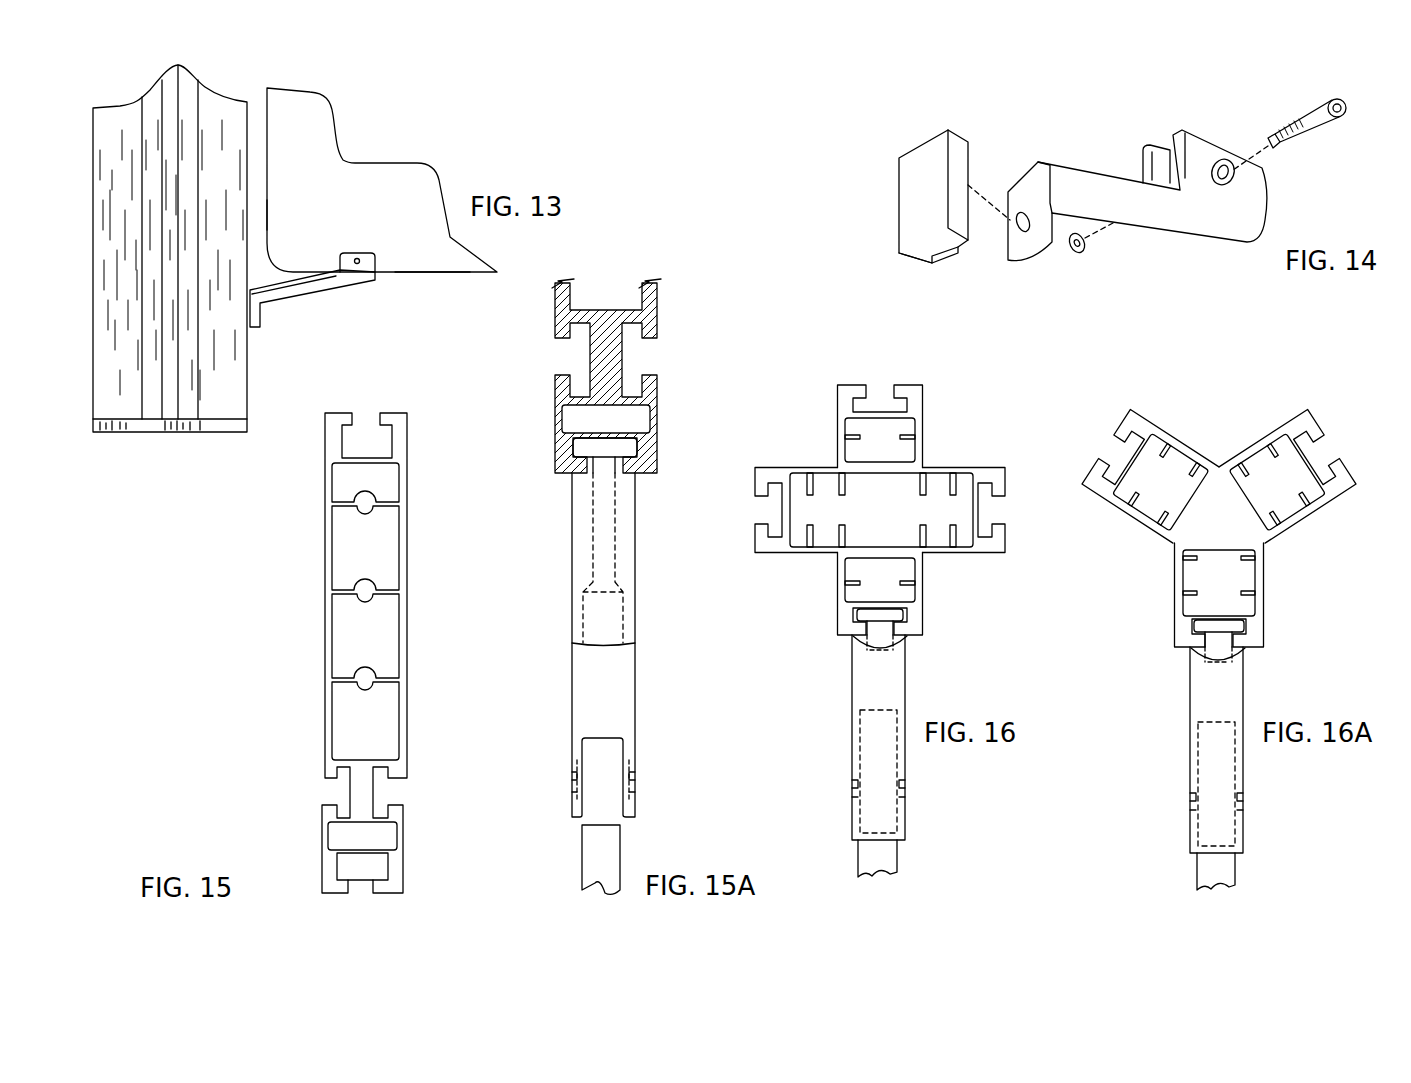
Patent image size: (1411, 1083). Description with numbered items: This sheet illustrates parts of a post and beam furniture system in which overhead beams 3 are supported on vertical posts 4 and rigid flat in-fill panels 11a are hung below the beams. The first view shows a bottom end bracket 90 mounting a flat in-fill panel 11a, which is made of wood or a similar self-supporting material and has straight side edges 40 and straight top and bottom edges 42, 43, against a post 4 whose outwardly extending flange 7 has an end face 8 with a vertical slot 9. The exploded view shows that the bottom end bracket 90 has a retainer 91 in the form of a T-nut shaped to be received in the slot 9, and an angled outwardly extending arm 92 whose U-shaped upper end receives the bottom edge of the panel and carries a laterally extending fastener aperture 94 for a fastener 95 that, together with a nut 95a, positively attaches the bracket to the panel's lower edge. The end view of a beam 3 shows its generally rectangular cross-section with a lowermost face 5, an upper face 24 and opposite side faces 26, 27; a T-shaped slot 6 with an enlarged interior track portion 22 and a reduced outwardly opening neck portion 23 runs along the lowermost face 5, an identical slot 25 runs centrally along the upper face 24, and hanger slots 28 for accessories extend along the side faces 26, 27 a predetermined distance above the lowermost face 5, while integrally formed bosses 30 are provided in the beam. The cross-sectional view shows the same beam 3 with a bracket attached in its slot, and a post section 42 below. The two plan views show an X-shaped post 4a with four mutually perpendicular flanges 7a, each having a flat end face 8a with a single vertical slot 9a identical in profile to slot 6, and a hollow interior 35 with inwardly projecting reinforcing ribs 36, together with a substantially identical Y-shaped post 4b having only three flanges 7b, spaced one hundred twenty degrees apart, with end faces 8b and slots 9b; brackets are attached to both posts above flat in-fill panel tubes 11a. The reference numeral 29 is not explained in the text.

In FIG. 15, the beam 3 is at (360, 639).
In FIG. 15A, the beam 3 is at (651, 282).
In FIG. 13, the post 4 is at (215, 100).
In FIG. 16, the X-shaped post 4a is at (873, 501).
In FIG. 16A, the Y-shaped post 4b is at (1233, 526).
In FIG. 15, the lowermost face 5 is at (330, 890).
In FIG. 15A, the lowermost face 5 is at (562, 480).
In FIG. 15, the slot 6 is at (360, 880).
In FIG. 15A, the slot 6 is at (640, 446).
In FIG. 16, the slot 6 is at (880, 629).
In FIG. 16A, the slot 6 is at (1218, 641).
In FIG. 13, the flange 7 is at (150, 258).
In FIG. 16, the flange 7a is at (886, 503).
In FIG. 16A, the flange 7b is at (1219, 520).
In FIG. 13, the end face 8 is at (100, 135).
In FIG. 16, the end face 8a is at (825, 501).
In FIG. 16A, the end face 8b is at (1256, 526).
In FIG. 13, the slot 9 is at (168, 225).
In FIG. 16, the slot 9a is at (878, 491).
In FIG. 16A, the slot 9b is at (1219, 528).
In FIG. 13, the flat in-fill panel 11a is at (317, 125).
In FIG. 15A, the flat in-fill panel 11a is at (580, 870).
In FIG. 16, the flat in-fill panel 11a is at (888, 860).
In FIG. 16A, the flat in-fill panel 11a is at (1227, 877).
In FIG. 15, the interior track portion 22 is at (385, 865).
In FIG. 15A, the interior track portion 22 is at (573, 447).
In FIG. 15, the neck portion 23 is at (378, 890).
In FIG. 15A, the neck portion 23 is at (628, 465).
In FIG. 15, the upper face 24 is at (340, 412).
In FIG. 15, the slot 25 is at (368, 410).
In FIG. 15, the side face 26 is at (326, 580).
In FIG. 15A, the side face 26 is at (555, 306).
In FIG. 15, the side face 27 is at (407, 590).
In FIG. 15A, the side face 27 is at (660, 312).
In FIG. 15, the hanger slot 28 is at (330, 790).
In FIG. 15A, the hanger slot 28 is at (566, 357).
In FIG. 15A, the hook recess 29 is at (636, 352).
In FIG. 15, the boss 30 is at (360, 500).
In FIG. 16, the hollow interior 35 is at (881, 510).
In FIG. 16A, the hollow interior 35 is at (1224, 526).
In FIG. 16, the reinforcing rib 36 is at (881, 510).
In FIG. 16A, the reinforcing rib 36 is at (1219, 519).
In FIG. 13, the side edge 40 is at (272, 196).
In FIG. 15A, the top edge 42 is at (593, 818).
In FIG. 16, the top edge 42 is at (878, 737).
In FIG. 16A, the top edge 42 is at (1216, 750).
In FIG. 13, the bottom edge 43 is at (405, 275).
In FIG. 13, the bottom end bracket 90 is at (376, 259).
In FIG. 14, the bottom end bracket 90 is at (1098, 185).
In FIG. 14, the retainer 91 is at (912, 210).
In FIG. 13, the arm 92 is at (300, 292).
In FIG. 14, the arm 92 is at (1132, 215).
In FIG. 13, the fastener aperture 94 is at (357, 256).
In FIG. 14, the fastener aperture 94 is at (1225, 159).
In FIG. 14, the fastener 95 is at (1312, 124).
In FIG. 14, the nut 95a is at (1085, 255).